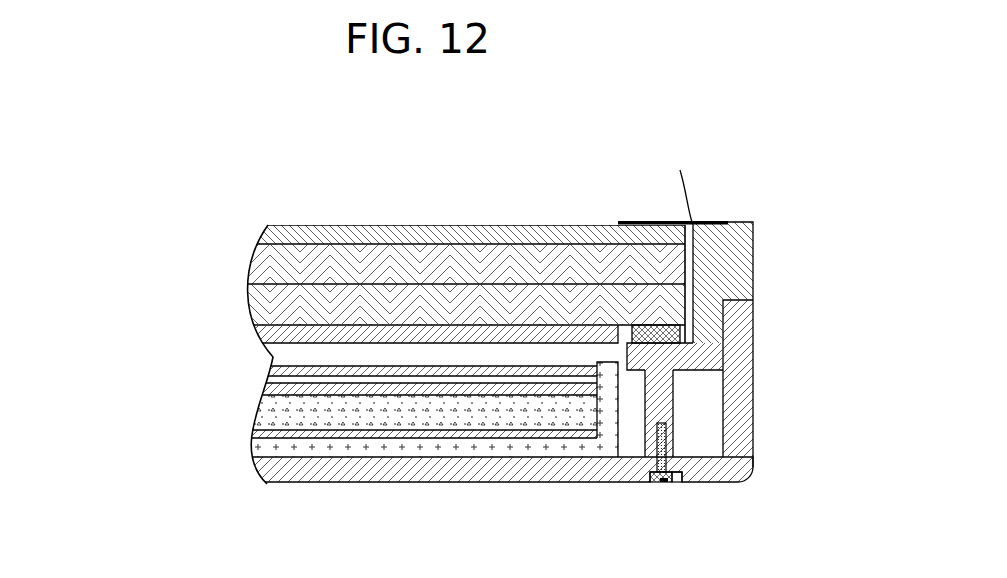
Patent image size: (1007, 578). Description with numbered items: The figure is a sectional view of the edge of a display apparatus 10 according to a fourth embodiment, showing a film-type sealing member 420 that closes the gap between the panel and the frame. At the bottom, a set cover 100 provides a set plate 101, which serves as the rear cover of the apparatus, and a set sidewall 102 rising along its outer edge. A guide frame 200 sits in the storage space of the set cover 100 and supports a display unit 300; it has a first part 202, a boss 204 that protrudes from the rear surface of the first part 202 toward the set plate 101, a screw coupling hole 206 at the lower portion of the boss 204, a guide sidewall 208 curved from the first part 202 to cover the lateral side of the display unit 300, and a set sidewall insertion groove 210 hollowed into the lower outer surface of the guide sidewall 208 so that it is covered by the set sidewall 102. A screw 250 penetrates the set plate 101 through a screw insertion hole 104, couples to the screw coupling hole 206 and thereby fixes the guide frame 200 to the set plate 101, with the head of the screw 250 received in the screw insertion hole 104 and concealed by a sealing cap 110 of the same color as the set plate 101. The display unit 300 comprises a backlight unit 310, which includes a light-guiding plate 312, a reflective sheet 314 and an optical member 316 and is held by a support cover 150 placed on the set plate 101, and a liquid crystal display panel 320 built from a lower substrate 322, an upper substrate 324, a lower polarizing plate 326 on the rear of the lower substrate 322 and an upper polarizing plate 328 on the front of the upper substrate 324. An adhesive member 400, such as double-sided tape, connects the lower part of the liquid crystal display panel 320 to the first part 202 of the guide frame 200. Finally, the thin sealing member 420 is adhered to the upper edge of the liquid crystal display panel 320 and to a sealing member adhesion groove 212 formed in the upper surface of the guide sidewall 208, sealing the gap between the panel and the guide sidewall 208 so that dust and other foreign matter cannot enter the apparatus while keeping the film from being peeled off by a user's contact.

The display apparatus 10 is at (443, 203).
The set cover 100 is at (755, 475).
The set plate 101 is at (265, 480).
The set sidewall 102 is at (740, 434).
The screw insertion hole 104 is at (677, 483).
The sealing cap 110 is at (655, 483).
The support cover 150 is at (253, 443).
The guide frame 200 is at (822, 238).
The first part 202 is at (690, 357).
The boss 204 is at (670, 383).
The screw coupling hole 206 is at (668, 422).
The guide sidewall 208 is at (733, 270).
The set sidewall insertion groove 210 is at (730, 316).
The sealing member adhesion groove 212 is at (716, 226).
The screw 250 is at (670, 447).
The display unit 300 is at (84, 275).
The backlight unit 310 is at (135, 377).
The light-guiding plate 312 is at (260, 415).
The reflective sheet 314 is at (253, 432).
The optical member 316 is at (268, 390).
The liquid crystal display panel 320 is at (150, 228).
The lower substrate 322 is at (262, 307).
The upper substrate 324 is at (262, 268).
The lower polarizing plate 326 is at (270, 337).
The upper polarizing plate 328 is at (270, 237).
The adhesive member 400 is at (656, 330).
The sealing member 420 is at (703, 222).